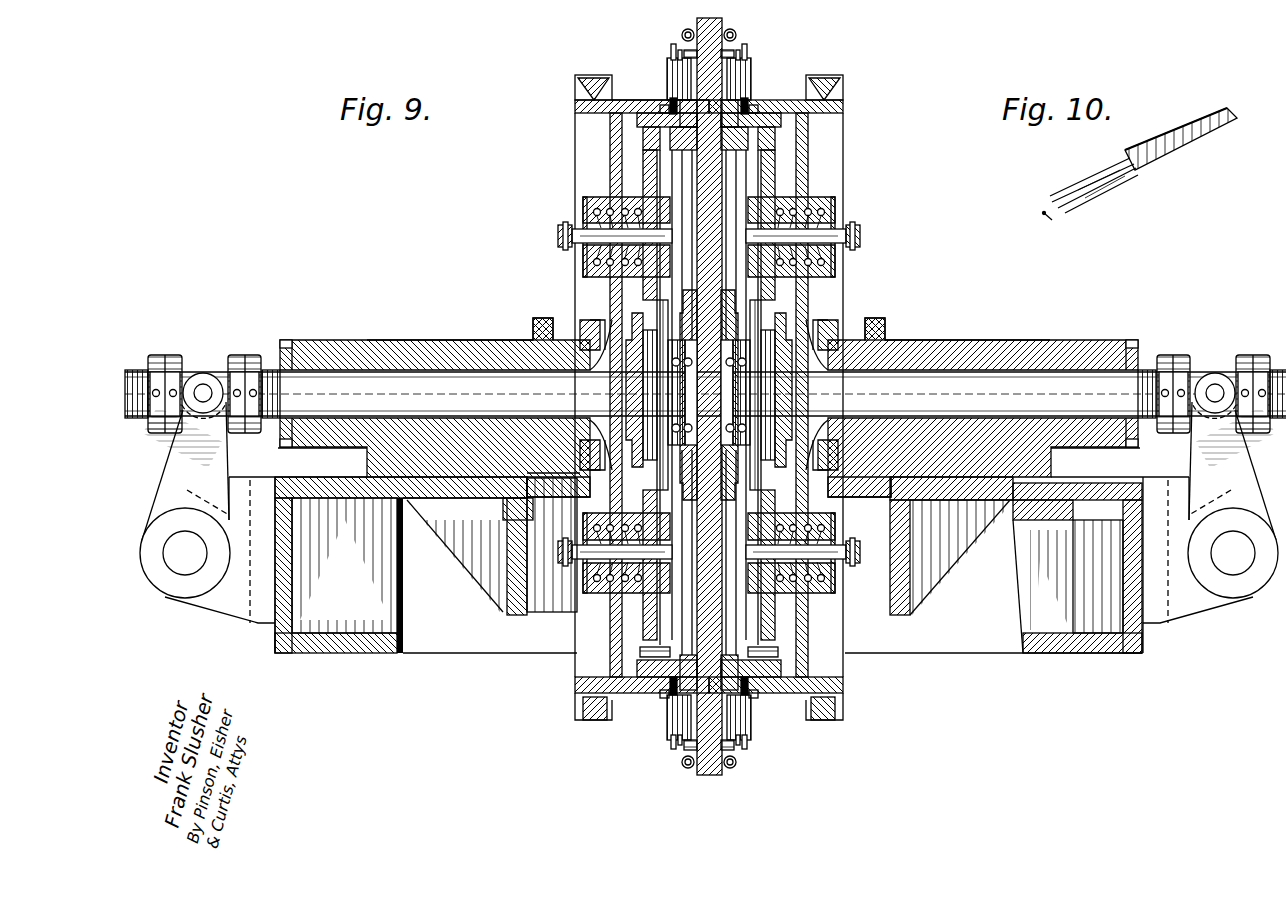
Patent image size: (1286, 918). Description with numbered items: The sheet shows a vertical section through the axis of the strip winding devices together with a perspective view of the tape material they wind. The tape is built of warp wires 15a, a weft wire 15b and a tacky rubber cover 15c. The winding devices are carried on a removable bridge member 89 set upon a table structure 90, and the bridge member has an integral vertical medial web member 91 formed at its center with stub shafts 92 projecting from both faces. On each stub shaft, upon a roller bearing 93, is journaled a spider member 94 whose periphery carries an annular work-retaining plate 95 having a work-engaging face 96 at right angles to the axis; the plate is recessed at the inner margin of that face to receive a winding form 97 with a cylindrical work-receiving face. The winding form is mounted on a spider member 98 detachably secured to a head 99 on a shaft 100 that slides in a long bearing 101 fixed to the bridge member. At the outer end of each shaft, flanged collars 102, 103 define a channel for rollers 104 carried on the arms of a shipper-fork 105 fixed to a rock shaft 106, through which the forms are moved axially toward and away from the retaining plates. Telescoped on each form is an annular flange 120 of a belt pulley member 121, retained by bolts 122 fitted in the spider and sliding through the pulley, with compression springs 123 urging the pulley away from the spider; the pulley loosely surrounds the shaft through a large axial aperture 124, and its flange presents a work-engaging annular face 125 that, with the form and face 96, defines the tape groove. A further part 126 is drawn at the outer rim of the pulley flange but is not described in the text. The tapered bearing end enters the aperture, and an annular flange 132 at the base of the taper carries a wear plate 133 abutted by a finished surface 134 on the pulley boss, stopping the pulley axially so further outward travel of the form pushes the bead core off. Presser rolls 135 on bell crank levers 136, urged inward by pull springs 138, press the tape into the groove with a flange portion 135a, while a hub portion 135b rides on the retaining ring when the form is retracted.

In FIG. 9, the bridge member 89 is at (950, 568).
In FIG. 9, the table structure 90 is at (1077, 568).
In FIG. 9, the web member 91 is at (710, 57).
In FIG. 9, the stub shaft 92 is at (676, 372).
In FIG. 9, the roller bearing 93 is at (660, 347).
In FIG. 9, the spider member 94 is at (682, 190).
In FIG. 9, the work-retaining plate 95 is at (668, 698).
In FIG. 9, the work-engaging face 96 is at (670, 100).
In FIG. 9, the winding form 97 is at (610, 128).
In FIG. 9, the spider member 98 is at (612, 197).
In FIG. 9, the head 99 is at (600, 380).
In FIG. 9, the shaft 100 is at (412, 380).
In FIG. 9, the bearing 101 is at (457, 340).
In FIG. 9, the flanged collar 102 is at (246, 355).
In FIG. 9, the flanged collar 103 is at (168, 355).
In FIG. 9, the roller 104 is at (199, 372).
In FIG. 9, the shipper-fork 105 is at (205, 483).
In FIG. 9, the rock shaft 106 is at (180, 553).
In FIG. 9, the annular flange 120 is at (575, 102).
In FIG. 9, the belt pulley member 121 is at (585, 198).
In FIG. 9, the bolt 122 is at (562, 232).
In FIG. 9, the compression spring 123 is at (597, 217).
In FIG. 9, the axial aperture 124 is at (585, 350).
In FIG. 9, the work-engaging annular face 125 is at (672, 105).
In FIG. 9, the rim insert 126 is at (578, 86).
In FIG. 9, the annular flange 132 is at (535, 322).
In FIG. 9, the wear plate 133 is at (610, 318).
In FIG. 9, the finished surface 134 is at (585, 300).
In FIG. 9, the presser roll 135 is at (748, 52).
In FIG. 9, the flange portion 135a is at (670, 50).
In FIG. 9, the hub portion 135b is at (674, 50).
In FIG. 9, the bell crank lever 136 is at (686, 752).
In FIG. 9, the pull spring 138 is at (684, 32).
In FIG. 10, the warp wire 15a is at (1072, 188).
In FIG. 10, the weft wire 15b is at (1052, 222).
In FIG. 10, the rubber cover 15c is at (1168, 150).